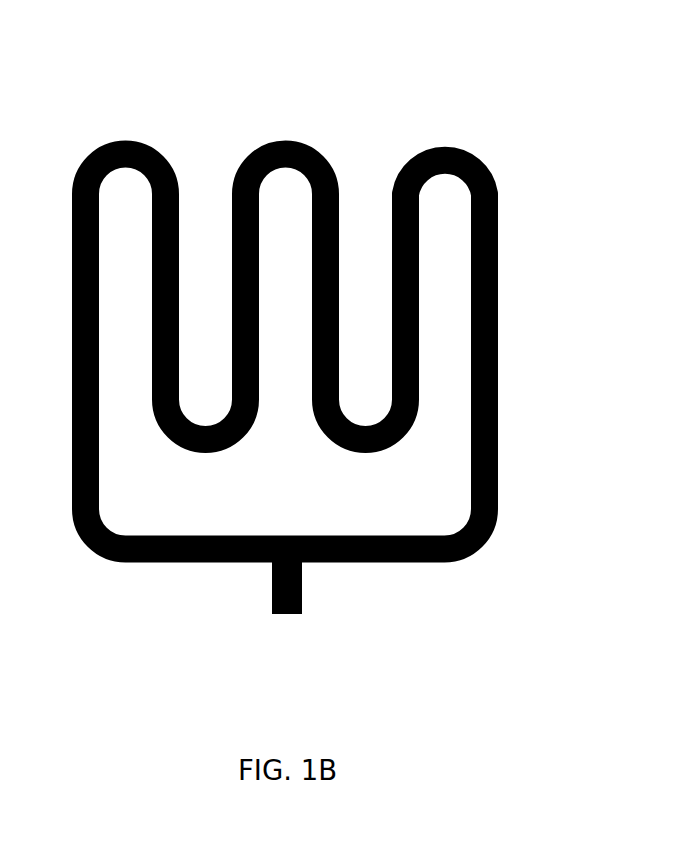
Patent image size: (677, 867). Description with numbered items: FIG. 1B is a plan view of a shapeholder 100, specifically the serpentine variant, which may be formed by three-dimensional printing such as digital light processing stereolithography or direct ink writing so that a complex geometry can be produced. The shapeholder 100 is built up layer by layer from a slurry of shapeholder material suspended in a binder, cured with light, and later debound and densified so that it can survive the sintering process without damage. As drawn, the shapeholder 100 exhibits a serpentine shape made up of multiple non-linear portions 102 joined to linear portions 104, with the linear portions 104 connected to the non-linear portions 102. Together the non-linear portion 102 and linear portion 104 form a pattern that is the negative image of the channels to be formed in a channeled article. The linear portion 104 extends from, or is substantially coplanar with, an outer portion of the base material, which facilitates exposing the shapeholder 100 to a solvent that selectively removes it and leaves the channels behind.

The shapeholder 100 is at (361, 328).
The non-linear portion 102 is at (499, 186).
The linear portion 104 is at (272, 600).